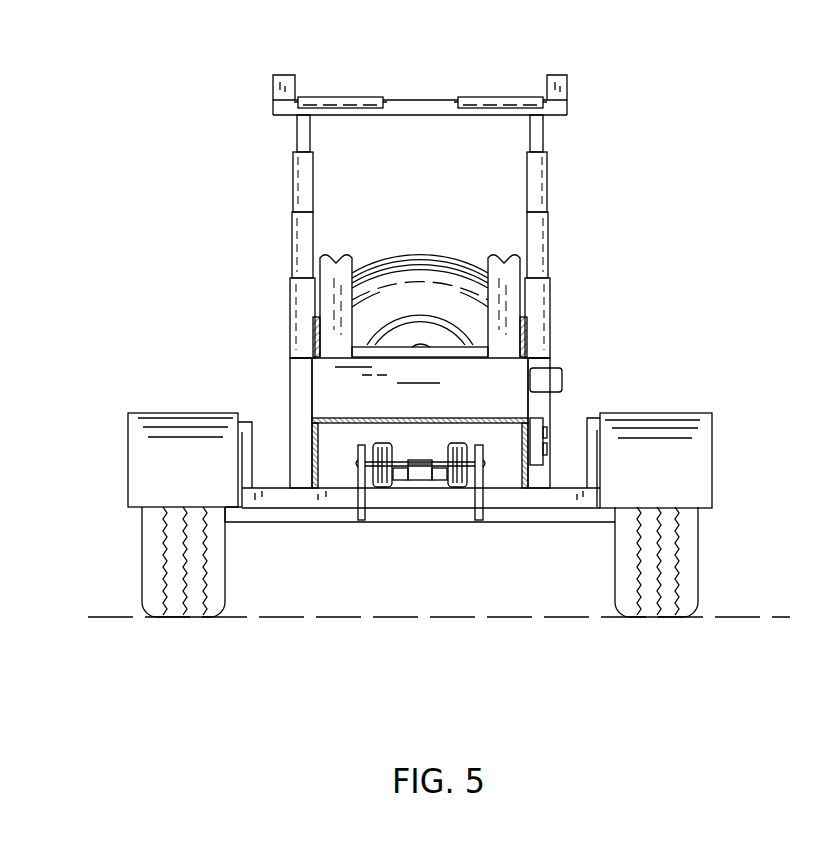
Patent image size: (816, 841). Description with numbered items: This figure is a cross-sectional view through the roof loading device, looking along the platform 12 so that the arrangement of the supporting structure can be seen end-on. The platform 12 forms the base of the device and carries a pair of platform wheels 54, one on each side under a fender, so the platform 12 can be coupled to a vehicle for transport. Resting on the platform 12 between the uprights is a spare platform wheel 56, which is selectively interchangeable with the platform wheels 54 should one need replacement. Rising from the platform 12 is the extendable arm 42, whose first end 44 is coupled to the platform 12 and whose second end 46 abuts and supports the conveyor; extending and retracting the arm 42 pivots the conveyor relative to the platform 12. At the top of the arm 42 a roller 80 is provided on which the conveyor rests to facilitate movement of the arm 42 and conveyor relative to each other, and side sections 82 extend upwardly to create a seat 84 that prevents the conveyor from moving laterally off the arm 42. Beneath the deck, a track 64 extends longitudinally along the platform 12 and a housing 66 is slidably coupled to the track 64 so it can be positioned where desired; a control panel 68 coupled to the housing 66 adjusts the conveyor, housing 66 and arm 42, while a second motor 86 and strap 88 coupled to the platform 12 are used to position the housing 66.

The platform 12 is at (298, 502).
The extendable arm 42 is at (300, 165).
The first end 44 is at (287, 487).
The second end 46 is at (295, 117).
The platform wheels 54 is at (150, 534).
The spare platform wheel 56 is at (421, 258).
The track 64 is at (366, 500).
The housing 66 is at (505, 497).
The control panel 68 is at (536, 425).
The roller 80 is at (338, 97).
The side sections 82 is at (285, 83).
The seat 84 is at (473, 84).
The second motor 86 is at (395, 480).
The strap 88 is at (418, 480).